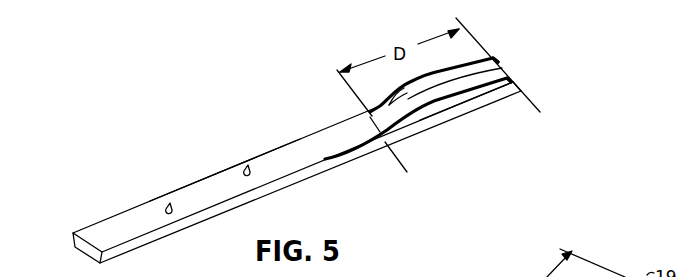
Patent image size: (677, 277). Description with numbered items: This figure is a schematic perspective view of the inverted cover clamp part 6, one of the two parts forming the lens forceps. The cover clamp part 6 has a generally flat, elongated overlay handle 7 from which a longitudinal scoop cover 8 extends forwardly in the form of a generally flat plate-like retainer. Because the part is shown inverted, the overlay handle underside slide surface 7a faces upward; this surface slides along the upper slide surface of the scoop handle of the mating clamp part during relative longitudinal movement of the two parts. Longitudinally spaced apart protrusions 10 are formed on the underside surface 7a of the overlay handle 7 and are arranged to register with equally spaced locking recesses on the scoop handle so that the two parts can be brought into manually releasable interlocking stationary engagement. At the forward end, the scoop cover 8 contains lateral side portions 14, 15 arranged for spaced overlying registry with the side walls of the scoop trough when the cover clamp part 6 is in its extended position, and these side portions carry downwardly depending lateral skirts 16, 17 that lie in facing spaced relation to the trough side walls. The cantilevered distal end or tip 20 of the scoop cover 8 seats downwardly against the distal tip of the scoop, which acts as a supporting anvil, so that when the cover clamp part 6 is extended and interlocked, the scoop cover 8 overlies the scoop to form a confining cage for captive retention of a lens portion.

The cover clamp part 6 is at (288, 172).
The overlay handle 7 is at (209, 178).
The overlay handle underside slide surface 7a is at (90, 233).
The protrusion 10 is at (166, 202).
The scoop cover 8 is at (438, 93).
The lateral side portion 14 is at (470, 104).
The lateral side portion 15 is at (472, 58).
The lateral skirt 16 is at (410, 117).
The lateral skirt 17 is at (390, 104).
The distal end or tip of scoop cover 20 is at (498, 63).